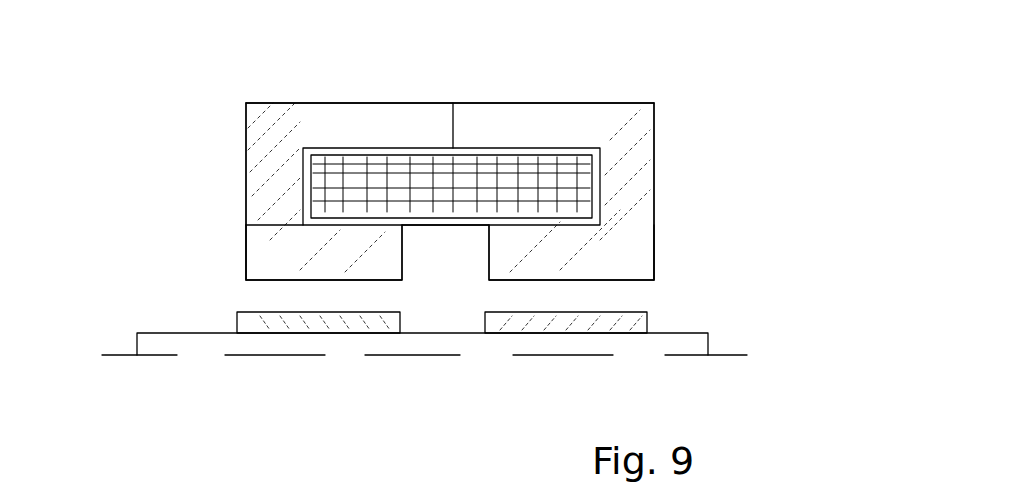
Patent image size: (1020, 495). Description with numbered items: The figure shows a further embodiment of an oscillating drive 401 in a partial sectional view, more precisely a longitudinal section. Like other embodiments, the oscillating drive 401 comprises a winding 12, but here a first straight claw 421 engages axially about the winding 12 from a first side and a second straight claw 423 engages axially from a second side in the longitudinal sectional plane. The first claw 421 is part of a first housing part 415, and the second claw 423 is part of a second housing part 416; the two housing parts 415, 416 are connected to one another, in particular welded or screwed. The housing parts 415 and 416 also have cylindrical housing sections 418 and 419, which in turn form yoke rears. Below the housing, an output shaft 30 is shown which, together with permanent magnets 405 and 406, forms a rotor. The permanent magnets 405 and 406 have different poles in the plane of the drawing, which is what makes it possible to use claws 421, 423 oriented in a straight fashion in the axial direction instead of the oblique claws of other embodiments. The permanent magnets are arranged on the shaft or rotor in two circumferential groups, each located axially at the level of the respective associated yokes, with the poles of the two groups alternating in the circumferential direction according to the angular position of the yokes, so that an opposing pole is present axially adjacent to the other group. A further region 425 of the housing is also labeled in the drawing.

The oscillating drive 401 is at (188, 56).
The cylindrical housing section 419 is at (322, 96).
The cylindrical housing section 418 is at (590, 103).
The first housing part 415 is at (678, 92).
The second housing part 416 is at (222, 139).
The lower housing region 425 is at (245, 194).
The second straight claw 423 is at (293, 282).
The first straight claw 421 is at (600, 280).
The winding 12 is at (443, 225).
The permanent magnet 406 is at (236, 318).
The permanent magnet 405 is at (648, 322).
The output shaft 30 is at (708, 345).